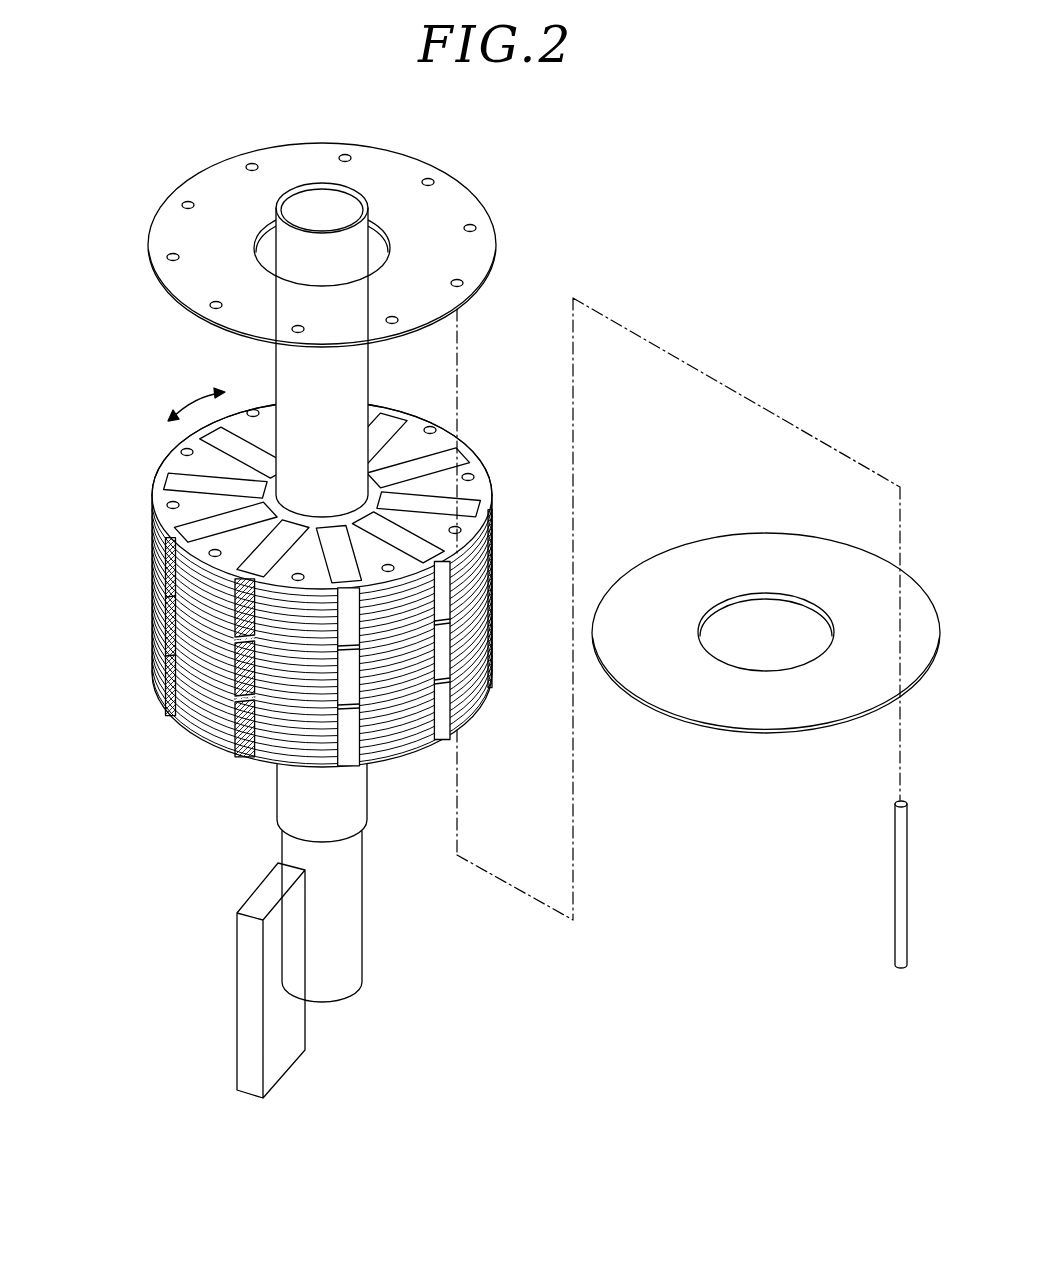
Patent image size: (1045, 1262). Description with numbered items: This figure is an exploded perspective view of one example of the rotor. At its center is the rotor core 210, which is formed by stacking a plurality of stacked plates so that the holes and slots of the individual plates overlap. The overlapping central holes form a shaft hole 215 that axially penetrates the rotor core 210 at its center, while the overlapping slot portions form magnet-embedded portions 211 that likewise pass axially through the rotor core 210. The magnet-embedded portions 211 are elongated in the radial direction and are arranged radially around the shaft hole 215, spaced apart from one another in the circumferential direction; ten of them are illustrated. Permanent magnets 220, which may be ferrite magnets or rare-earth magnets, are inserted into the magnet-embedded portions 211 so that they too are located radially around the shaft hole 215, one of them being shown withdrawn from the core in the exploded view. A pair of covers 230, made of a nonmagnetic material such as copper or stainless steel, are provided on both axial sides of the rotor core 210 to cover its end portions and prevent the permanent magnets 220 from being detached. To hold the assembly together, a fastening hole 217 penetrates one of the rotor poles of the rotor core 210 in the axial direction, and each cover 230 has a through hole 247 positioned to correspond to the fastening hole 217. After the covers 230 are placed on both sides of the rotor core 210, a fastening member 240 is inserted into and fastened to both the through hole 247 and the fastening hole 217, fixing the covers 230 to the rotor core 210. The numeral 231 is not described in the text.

The rotor core 210 is at (293, 570).
The magnet-embedded portion 211 is at (258, 562).
The shaft hole 215 is at (383, 470).
The fastening hole 217 is at (461, 529).
The permanent magnet 220 is at (242, 960).
The cover 230 is at (544, 470).
The end plate edge 231 is at (195, 550).
The fastening member 240 is at (890, 900).
The through hole 247 is at (434, 182).